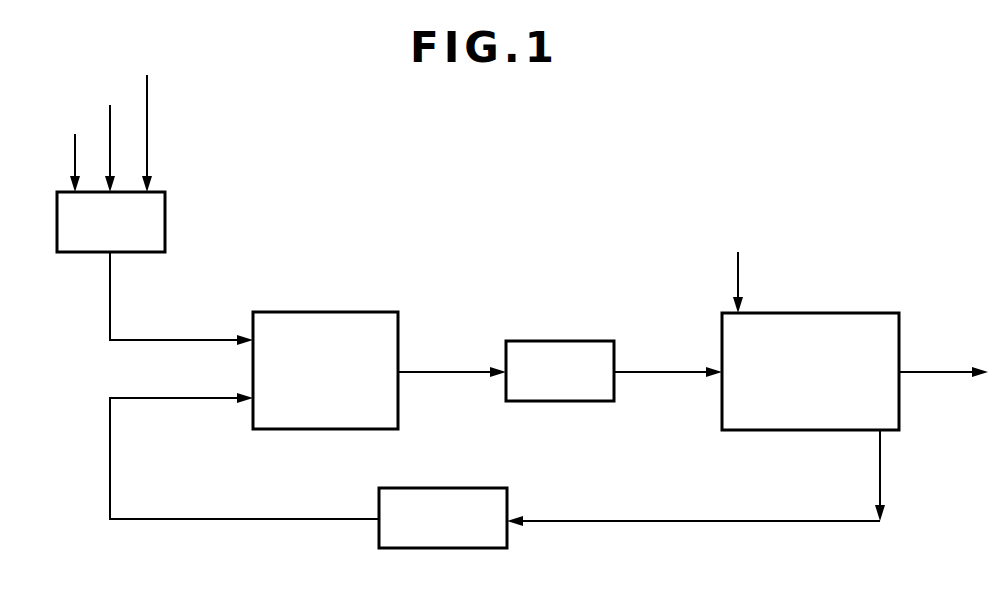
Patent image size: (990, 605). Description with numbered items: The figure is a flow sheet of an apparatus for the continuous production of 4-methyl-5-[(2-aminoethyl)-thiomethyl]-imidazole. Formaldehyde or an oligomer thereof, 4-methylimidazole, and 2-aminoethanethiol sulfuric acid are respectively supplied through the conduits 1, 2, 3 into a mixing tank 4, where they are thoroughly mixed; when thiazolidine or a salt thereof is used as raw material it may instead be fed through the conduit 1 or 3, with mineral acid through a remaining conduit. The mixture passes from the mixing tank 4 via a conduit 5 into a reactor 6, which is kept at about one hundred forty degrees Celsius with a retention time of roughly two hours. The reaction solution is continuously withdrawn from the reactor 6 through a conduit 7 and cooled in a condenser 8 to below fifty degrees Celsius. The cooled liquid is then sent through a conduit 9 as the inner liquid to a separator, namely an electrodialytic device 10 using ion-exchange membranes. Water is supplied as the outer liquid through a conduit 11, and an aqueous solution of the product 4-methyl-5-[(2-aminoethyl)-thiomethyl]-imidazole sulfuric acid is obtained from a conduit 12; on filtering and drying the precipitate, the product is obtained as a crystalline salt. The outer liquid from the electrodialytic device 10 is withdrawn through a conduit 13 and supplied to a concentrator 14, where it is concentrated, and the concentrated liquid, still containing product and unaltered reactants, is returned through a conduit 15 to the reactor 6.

The conduit 1 is at (75, 152).
The conduit 2 is at (110, 130).
The conduit 3 is at (147, 103).
The mixing tank 4 is at (160, 214).
The conduit 5 is at (149, 340).
The reactor 6 is at (344, 327).
The conduit 7 is at (449, 372).
The condenser 8 is at (570, 352).
The conduit 9 is at (670, 370).
The electrodialytic device 10 is at (843, 329).
The conduit 11 is at (738, 264).
The conduit 12 is at (938, 371).
The conduit 13 is at (670, 520).
The concentrator 14 is at (425, 536).
The conduit 15 is at (152, 398).